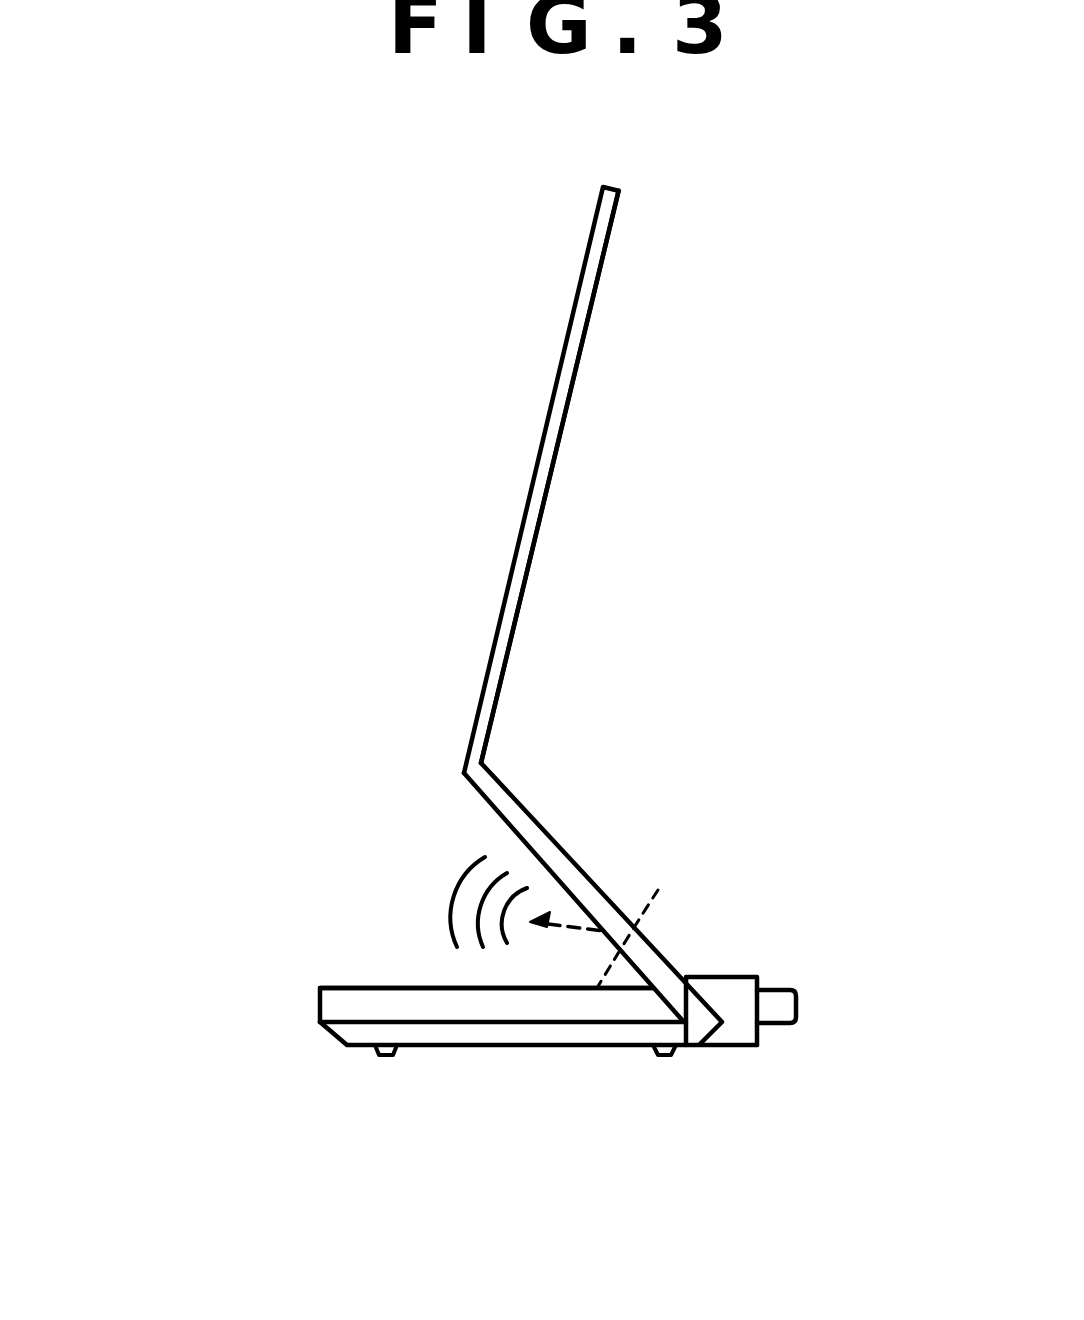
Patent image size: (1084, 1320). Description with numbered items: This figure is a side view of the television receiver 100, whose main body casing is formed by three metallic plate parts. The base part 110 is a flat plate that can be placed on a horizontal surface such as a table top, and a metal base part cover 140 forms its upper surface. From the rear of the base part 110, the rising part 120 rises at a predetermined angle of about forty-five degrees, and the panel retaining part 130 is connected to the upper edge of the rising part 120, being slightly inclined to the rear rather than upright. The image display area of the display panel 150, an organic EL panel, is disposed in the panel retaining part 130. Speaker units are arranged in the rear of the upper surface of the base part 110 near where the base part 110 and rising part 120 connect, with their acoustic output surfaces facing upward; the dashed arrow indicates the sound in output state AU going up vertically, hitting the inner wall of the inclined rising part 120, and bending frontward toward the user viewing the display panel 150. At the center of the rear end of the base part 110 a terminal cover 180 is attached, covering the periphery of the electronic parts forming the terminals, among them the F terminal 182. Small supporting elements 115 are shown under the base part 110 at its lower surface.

The television receiver 100 is at (587, 318).
The base part 110 is at (553, 1035).
The feet 115 is at (383, 1055).
The rising part 120 is at (560, 845).
The panel retaining part 130 is at (532, 560).
The base part cover 140 is at (337, 1008).
The display panel 150 is at (545, 425).
The terminal cover 180 is at (738, 976).
The F terminal 182 is at (777, 1007).
The sound in output state AU is at (603, 931).